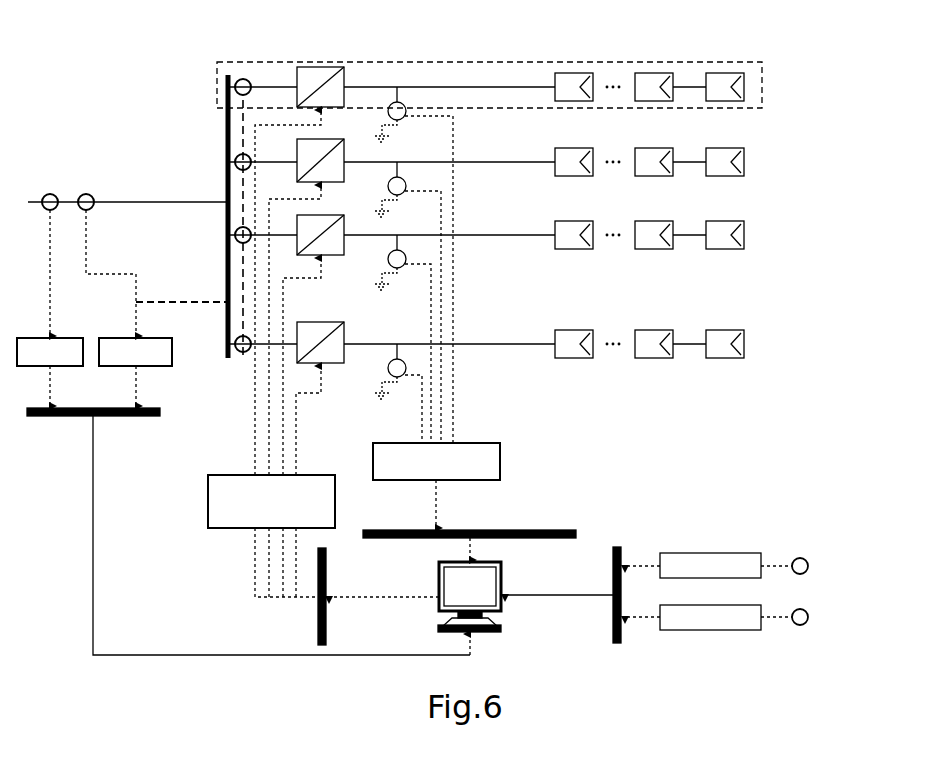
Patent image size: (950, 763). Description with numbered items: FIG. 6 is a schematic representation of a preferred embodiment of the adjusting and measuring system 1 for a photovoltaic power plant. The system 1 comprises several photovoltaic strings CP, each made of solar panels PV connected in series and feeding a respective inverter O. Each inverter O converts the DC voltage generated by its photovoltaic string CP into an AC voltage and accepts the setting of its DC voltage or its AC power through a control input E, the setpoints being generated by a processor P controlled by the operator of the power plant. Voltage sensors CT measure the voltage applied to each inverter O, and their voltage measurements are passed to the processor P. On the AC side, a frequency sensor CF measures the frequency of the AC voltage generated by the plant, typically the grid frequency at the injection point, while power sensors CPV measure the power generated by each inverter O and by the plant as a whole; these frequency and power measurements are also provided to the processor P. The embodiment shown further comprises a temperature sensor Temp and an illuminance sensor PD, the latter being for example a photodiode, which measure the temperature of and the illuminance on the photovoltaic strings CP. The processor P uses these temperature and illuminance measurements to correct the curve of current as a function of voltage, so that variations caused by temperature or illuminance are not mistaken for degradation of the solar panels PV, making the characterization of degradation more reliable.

The adjusting and measuring system 1 is at (818, 41).
The power sensor CPV is at (88, 194).
The frequency sensor CF is at (47, 195).
The inverter O is at (323, 67).
The control input E is at (324, 125).
The voltage sensor CT is at (400, 176).
The photovoltaic string CP is at (577, 68).
The solar panel PV is at (655, 72).
The processor P is at (503, 575).
The temperature sensor Temp is at (802, 557).
The illuminance sensor PD is at (804, 609).